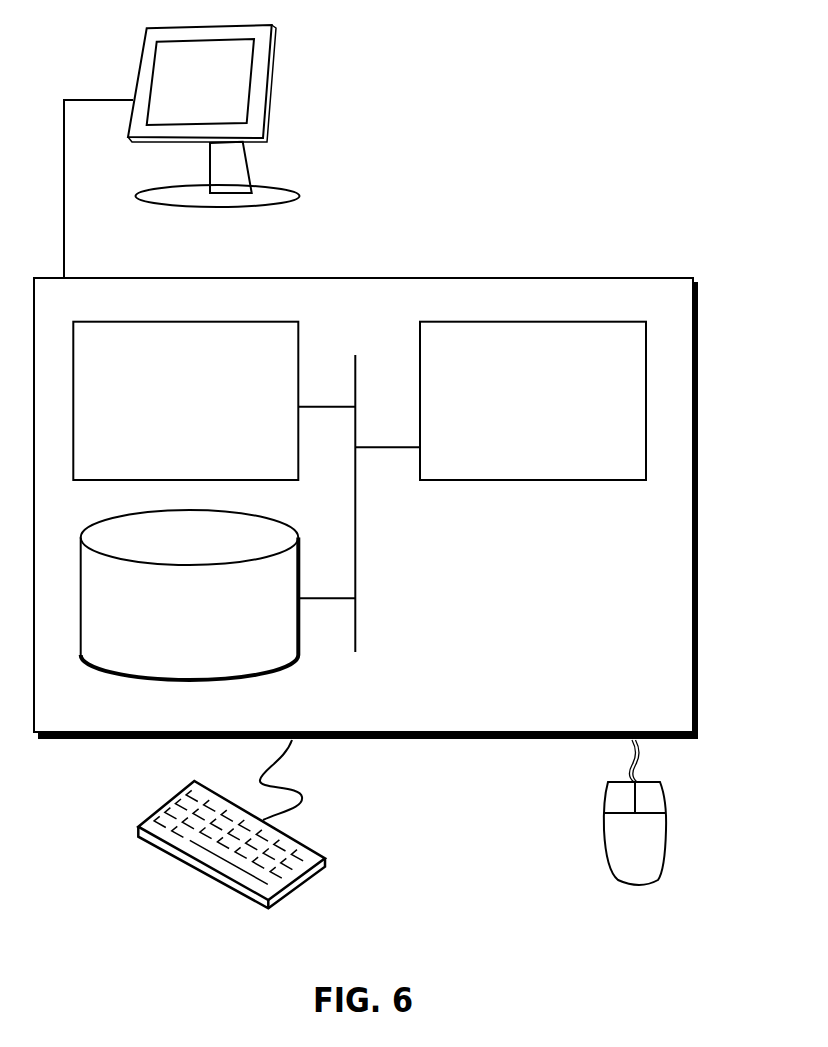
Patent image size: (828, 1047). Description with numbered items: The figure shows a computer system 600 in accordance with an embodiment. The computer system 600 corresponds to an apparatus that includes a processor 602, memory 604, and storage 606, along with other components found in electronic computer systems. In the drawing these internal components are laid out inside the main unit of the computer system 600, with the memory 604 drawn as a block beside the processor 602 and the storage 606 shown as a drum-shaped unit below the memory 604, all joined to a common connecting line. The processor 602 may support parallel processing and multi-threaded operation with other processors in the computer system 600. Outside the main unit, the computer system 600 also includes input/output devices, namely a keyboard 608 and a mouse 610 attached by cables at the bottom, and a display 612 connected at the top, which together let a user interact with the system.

The computer system 600 is at (410, 258).
The processor 602 is at (558, 414).
The memory 604 is at (165, 413).
The storage 606 is at (171, 624).
The keyboard 608 is at (157, 845).
The mouse 610 is at (613, 856).
The display 612 is at (182, 151).